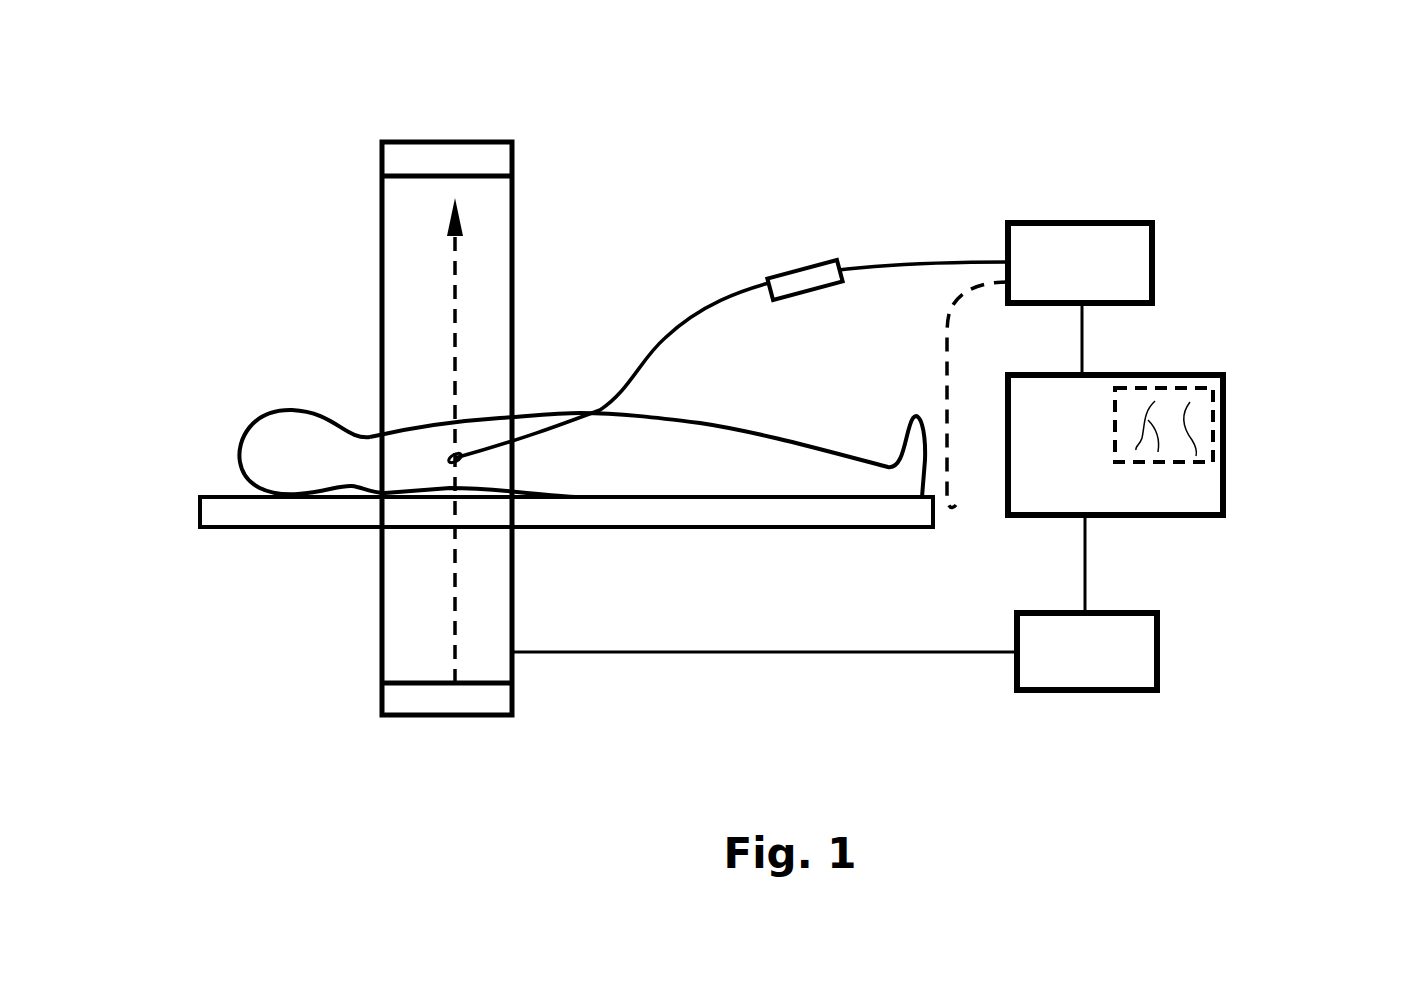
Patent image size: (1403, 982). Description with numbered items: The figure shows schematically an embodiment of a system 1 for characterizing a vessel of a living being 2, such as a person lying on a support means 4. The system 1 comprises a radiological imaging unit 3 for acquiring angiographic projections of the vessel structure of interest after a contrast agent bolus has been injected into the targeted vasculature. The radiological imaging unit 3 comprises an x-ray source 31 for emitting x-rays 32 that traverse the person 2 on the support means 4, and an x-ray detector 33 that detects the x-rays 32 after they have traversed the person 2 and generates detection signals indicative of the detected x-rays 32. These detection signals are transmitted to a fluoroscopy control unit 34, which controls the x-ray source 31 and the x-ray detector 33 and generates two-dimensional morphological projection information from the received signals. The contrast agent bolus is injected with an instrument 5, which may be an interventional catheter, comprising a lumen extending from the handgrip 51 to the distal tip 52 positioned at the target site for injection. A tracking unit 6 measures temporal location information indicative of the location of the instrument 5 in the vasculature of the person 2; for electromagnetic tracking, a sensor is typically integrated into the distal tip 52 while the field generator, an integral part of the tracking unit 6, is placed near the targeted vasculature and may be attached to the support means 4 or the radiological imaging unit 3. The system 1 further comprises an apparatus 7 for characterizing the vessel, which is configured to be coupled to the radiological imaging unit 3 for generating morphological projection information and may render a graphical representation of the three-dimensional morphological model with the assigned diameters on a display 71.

The system 1 is at (256, 127).
The living being 2 is at (297, 408).
The radiological imaging unit 3 is at (514, 222).
The support means 4 is at (236, 530).
The instrument 5 is at (651, 330).
The tracking unit 6 is at (1152, 262).
The apparatus 7 is at (1183, 517).
The x-ray source 31 is at (380, 695).
The x-rays 32 is at (458, 614).
The x-ray detector 33 is at (476, 142).
The fluoroscopy control unit 34 is at (1158, 656).
The handgrip 51 is at (808, 262).
The distal tip 52 is at (440, 484).
The display 71 is at (1185, 464).